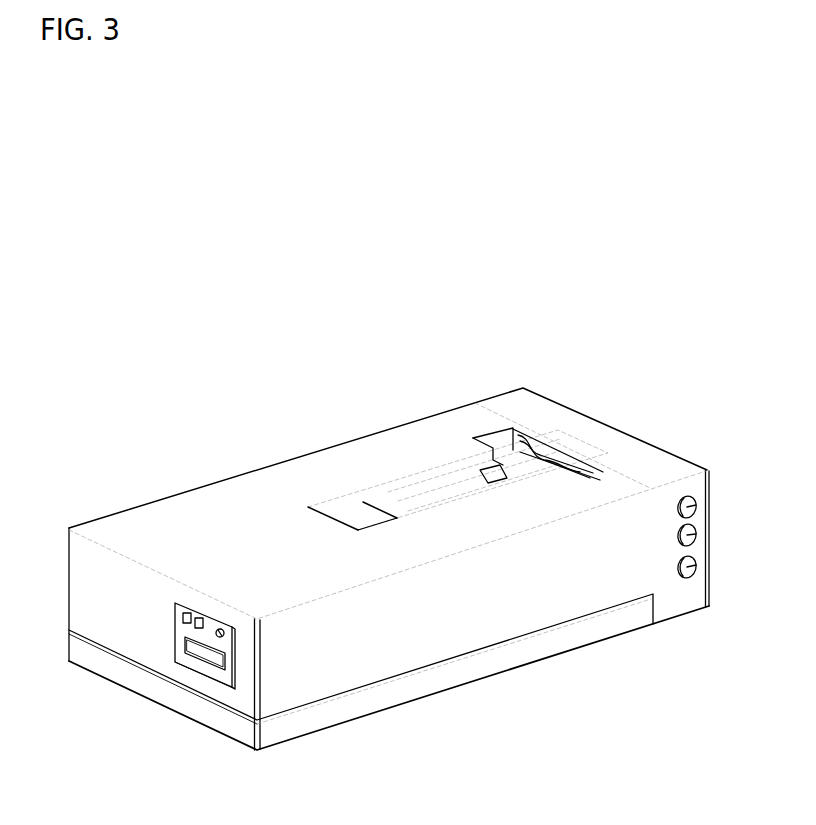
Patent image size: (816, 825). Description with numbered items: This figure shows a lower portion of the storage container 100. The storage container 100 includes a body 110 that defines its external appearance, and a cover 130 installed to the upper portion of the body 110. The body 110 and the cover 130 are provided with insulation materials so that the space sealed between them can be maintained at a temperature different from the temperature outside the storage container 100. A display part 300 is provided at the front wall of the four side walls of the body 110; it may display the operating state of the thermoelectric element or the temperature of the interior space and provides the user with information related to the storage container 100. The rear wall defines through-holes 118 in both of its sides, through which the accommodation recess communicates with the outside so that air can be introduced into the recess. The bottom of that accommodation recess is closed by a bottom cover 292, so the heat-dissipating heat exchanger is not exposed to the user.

The storage container 100 is at (189, 404).
The body 110 is at (340, 424).
The bottom cover 292 is at (606, 433).
The through-holes 118 is at (696, 505).
The cover 130 is at (103, 664).
The display part 300 is at (227, 677).